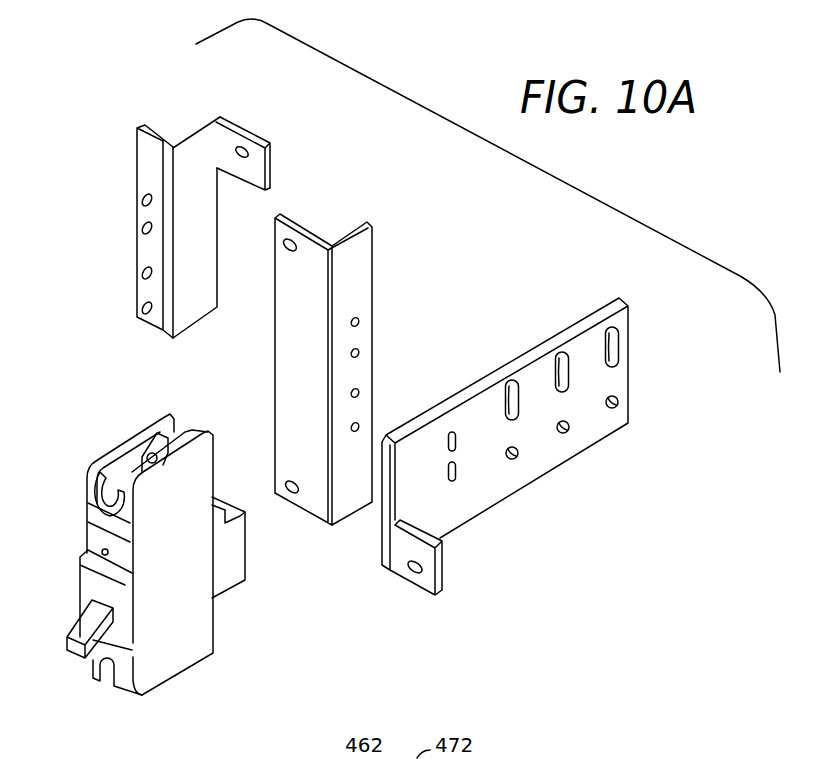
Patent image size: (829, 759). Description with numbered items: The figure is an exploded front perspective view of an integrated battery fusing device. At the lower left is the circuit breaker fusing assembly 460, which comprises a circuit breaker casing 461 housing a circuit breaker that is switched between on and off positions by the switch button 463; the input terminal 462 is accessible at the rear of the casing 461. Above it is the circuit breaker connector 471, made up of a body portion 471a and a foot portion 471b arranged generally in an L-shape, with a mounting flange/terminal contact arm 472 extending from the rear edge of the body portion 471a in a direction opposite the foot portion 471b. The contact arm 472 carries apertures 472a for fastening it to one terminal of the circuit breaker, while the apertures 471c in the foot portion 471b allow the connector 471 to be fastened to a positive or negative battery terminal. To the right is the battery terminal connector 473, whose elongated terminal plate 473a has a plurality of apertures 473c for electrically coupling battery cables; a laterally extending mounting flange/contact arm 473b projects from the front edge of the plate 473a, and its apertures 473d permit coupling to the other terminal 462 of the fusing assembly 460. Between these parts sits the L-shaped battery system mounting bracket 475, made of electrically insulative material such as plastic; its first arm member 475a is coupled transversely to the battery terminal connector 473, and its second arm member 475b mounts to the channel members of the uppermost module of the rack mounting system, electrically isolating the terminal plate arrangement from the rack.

The circuit breaker fusing assembly 460 is at (173, 575).
The circuit breaker casing 461 is at (188, 628).
The input terminal 462 is at (163, 433).
The switch button 463 is at (75, 655).
The circuit breaker connector 471 is at (178, 193).
The body portion 471a is at (202, 152).
The foot portion 471b is at (148, 159).
The apertures 471c is at (140, 228).
The mounting flange/terminal contact arm 472 is at (264, 152).
The apertures 472a is at (237, 162).
The battery terminal connector 473 is at (537, 469).
The elongated terminal plate 473a is at (495, 485).
The mounting flange/contact arm 473b is at (412, 580).
The apertures 473c is at (627, 398).
The apertures 473d is at (410, 565).
The battery system mounting bracket 475 is at (337, 369).
The first arm member 475a is at (358, 338).
The second arm member 475b is at (283, 320).